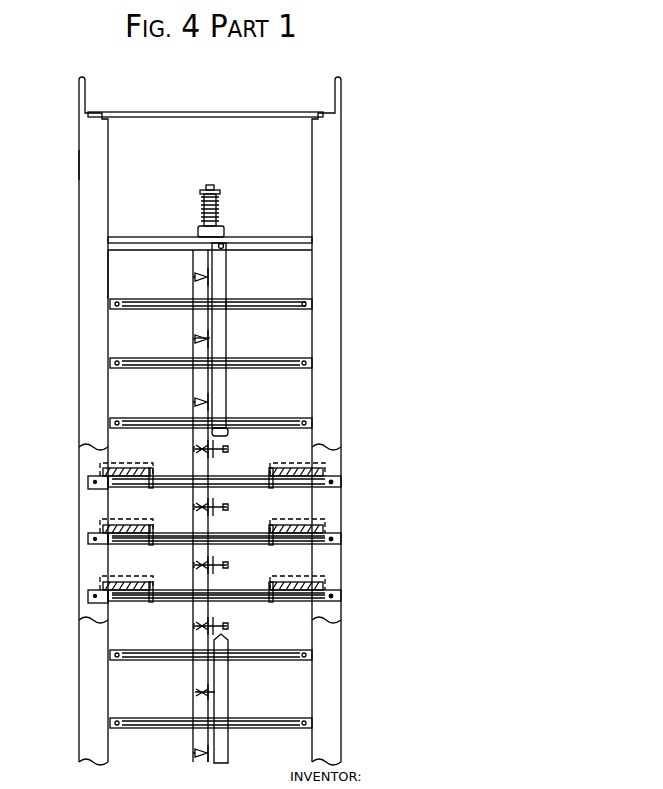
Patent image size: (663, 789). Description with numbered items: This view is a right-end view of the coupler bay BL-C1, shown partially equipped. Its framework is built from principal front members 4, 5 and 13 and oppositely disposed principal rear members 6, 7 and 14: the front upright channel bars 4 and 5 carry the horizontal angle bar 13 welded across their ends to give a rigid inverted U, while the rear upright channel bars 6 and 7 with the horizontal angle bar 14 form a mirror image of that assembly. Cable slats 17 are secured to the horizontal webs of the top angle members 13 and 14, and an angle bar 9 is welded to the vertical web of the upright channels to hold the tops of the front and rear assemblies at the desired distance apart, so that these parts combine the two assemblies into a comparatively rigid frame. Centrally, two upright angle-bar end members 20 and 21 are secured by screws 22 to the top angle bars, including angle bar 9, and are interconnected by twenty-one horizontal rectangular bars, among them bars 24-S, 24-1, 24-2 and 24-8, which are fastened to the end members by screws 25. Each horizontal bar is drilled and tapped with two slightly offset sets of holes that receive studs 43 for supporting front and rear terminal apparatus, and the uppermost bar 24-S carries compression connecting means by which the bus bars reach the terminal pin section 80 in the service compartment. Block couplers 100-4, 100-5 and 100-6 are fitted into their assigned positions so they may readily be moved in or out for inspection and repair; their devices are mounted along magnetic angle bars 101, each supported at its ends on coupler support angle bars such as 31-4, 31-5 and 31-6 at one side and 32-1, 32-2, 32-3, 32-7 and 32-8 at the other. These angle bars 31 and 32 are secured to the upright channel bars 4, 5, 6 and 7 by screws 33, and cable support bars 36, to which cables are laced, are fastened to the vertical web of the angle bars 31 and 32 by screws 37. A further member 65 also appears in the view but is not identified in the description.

The horizontal angle bar 13 is at (85, 92).
The horizontal angle bar 14 is at (335, 92).
The cable slats 17 is at (217, 111).
The coupler bay BL-C1 is at (79, 163).
The terminal pin section 80 is at (217, 192).
The top cross bar 65 is at (168, 237).
The angle bar 9 is at (137, 251).
The upright angle-bar end member 20 is at (195, 262).
The screws 22 is at (222, 249).
The upright angle-bar end member 21 is at (226, 282).
The horizontal rectangular bar 24-S is at (209, 282).
The screws 25 is at (208, 337).
The horizontal rectangular bar 24-1 is at (208, 338).
The horizontal rectangular bar 24-2 is at (208, 402).
The horizontal rectangular bar 24-8 is at (208, 762).
The angle bar 32-1 is at (310, 298).
The angle bar 32-2 is at (310, 357).
The angle bar 32-3 is at (310, 417).
The angle bar 32-7 is at (312, 650).
The angle bar 32-8 is at (312, 718).
The angle bar 32 is at (255, 650).
The cable support bars 36 is at (252, 360).
The screws 37 is at (308, 358).
The upright channel bar 7 is at (338, 436).
The upright channel bar 6 is at (342, 498).
The upright channel bar 5 is at (79, 404).
The upright channel bar 4 is at (85, 470).
The block coupler 100-4 is at (151, 457).
The block coupler 100-5 is at (151, 519).
The block coupler 100-6 is at (151, 574).
The angle bar 31-4 is at (342, 474).
The angle bar 31-5 is at (332, 539).
The angle bar 31-6 is at (342, 593).
The angle bar 31 is at (252, 488).
The screws 33 is at (92, 539).
The magnetic angle bar 101 is at (153, 607).
The studs 43 is at (218, 623).